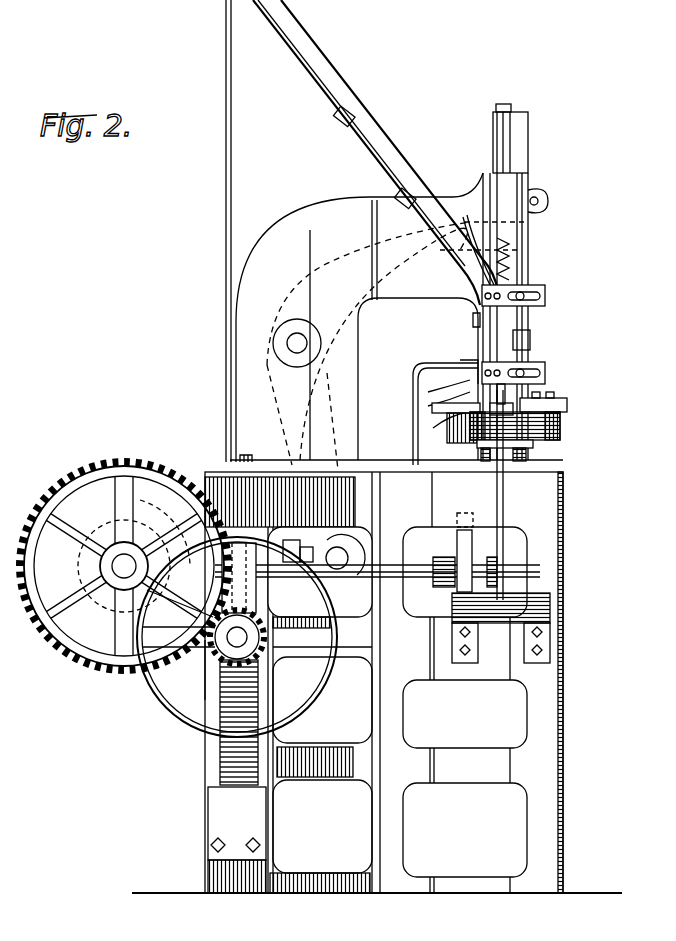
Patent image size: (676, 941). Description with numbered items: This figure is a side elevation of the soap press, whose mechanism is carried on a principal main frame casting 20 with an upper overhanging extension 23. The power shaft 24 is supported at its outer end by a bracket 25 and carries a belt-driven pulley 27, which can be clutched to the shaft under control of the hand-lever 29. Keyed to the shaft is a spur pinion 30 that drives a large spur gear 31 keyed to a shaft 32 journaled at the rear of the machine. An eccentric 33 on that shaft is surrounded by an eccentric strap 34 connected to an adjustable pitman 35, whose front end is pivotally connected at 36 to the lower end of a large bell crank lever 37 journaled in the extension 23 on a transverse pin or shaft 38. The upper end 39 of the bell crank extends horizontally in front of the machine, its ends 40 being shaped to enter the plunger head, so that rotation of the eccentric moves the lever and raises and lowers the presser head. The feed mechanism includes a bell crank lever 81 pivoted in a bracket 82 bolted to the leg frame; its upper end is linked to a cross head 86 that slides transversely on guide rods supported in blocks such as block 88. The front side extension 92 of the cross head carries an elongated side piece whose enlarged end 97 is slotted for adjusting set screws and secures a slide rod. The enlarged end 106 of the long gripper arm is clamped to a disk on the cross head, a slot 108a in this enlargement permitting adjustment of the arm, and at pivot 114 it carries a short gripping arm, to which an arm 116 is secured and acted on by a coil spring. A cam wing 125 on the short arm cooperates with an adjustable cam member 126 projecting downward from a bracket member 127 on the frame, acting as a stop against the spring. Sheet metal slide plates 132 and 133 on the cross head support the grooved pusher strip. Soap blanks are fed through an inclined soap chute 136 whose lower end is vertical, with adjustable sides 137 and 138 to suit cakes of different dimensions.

The main frame casting 20 is at (384, 676).
The upper overhanging extension 23 is at (327, 224).
The power shaft 24 is at (237, 637).
The bracket 25 is at (212, 758).
The pulley 27 is at (308, 708).
The hand-lever 29 is at (236, 640).
The spur pinion 30 is at (205, 683).
The large spur gear 31 is at (92, 674).
The shaft 32 is at (120, 572).
The eccentric 33 is at (146, 516).
The eccentric strap 34 is at (167, 498).
The adjustable pitman 35 is at (298, 560).
The pivotal connection 36 is at (340, 556).
The bell crank lever 37 is at (278, 363).
The transverse pin or shaft 38 is at (296, 343).
The upper end of bell crank 39 is at (365, 250).
The ends of bell crank arm 40 is at (510, 233).
The bell crank lever 81 is at (503, 505).
The bracket 82 is at (462, 606).
The cross head 86 is at (530, 433).
The block 88 is at (525, 446).
The front side extension 92 is at (518, 137).
The enlarged end 97 is at (548, 410).
The enlarged end of gripper arm 106 is at (452, 420).
The spring 108a is at (520, 250).
The pivot 114 is at (465, 360).
The arm 116 is at (433, 428).
The cam wing 125 is at (428, 406).
The adjustable cam member 126 is at (428, 392).
The bracket member 127 is at (415, 387).
The slide plate 132 is at (470, 425).
The slide plate 133 is at (515, 396).
The inclined soap chute 136 is at (370, 114).
The chute side 137 is at (520, 361).
The chute side 138 is at (522, 276).